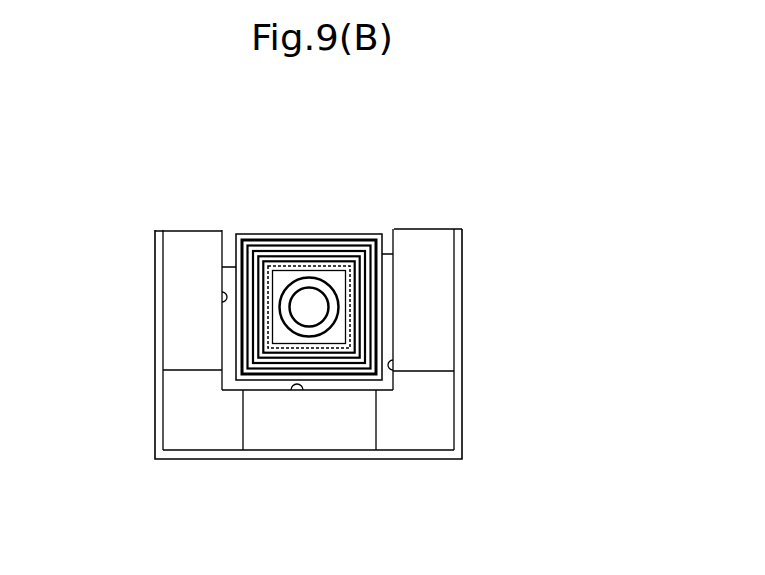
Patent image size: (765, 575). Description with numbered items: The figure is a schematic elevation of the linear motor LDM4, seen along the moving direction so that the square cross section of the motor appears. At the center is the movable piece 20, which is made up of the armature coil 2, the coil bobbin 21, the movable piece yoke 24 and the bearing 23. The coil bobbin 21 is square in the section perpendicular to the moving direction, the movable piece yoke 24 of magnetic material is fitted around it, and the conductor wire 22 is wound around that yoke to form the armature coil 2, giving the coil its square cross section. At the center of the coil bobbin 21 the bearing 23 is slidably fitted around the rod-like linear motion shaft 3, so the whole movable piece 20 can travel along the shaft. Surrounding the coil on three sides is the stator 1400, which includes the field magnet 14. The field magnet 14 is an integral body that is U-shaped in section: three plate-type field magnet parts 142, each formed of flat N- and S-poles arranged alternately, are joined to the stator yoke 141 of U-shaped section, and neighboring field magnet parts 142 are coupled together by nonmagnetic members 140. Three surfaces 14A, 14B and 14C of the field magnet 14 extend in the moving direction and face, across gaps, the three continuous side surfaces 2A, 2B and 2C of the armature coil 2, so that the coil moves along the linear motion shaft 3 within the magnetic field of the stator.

The stator 1400 is at (143, 228).
The field magnet 14 is at (182, 287).
The surface of the field magnet 14A is at (299, 390).
The surface of the field magnet 14B is at (222, 303).
The surface of the field magnet 14C is at (393, 375).
The nonmagnetic member 140 is at (197, 421).
The stator yoke 141 is at (200, 455).
The field magnet part 142 is at (183, 342).
The armature coil 2 is at (308, 233).
The movable piece 20 is at (282, 222).
The conductor wire 22 is at (328, 238).
The side surface of the armature coil 2A is at (325, 381).
The side surface of the armature coil 2B is at (222, 267).
The side surface of the armature coil 2C is at (394, 255).
The linear motion shaft 3 is at (313, 302).
The coil bobbin 21 is at (335, 333).
The bearing 23 is at (333, 317).
The movable piece yoke 24 is at (346, 343).
The linear motor LDM4 is at (535, 260).